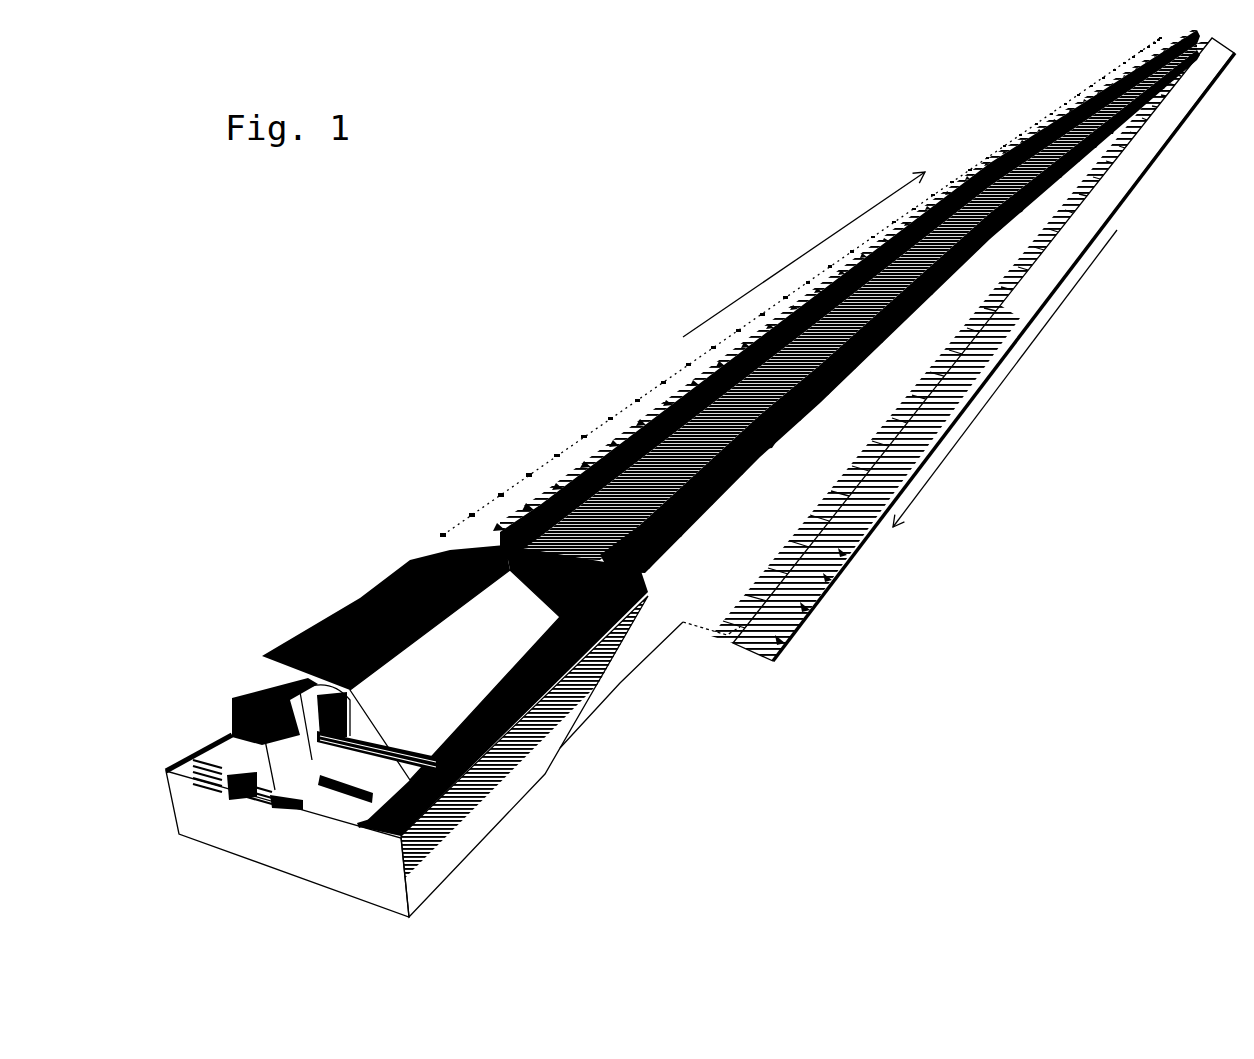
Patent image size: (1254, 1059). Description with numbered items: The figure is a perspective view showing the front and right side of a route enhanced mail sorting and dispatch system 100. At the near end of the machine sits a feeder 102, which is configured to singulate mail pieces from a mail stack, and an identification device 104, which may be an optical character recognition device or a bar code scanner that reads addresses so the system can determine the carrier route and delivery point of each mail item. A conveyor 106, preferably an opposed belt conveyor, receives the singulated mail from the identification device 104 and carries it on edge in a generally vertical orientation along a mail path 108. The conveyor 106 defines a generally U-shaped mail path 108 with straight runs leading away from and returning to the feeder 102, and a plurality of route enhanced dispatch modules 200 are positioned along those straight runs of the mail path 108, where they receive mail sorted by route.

The route enhanced mail sorting and dispatch system 100 is at (625, 268).
The feeder 102 is at (260, 760).
The identification device 104 is at (371, 620).
The conveyor 106 is at (773, 310).
The mail path 108 is at (850, 212).
The route enhanced dispatch modules 200 is at (1017, 132).